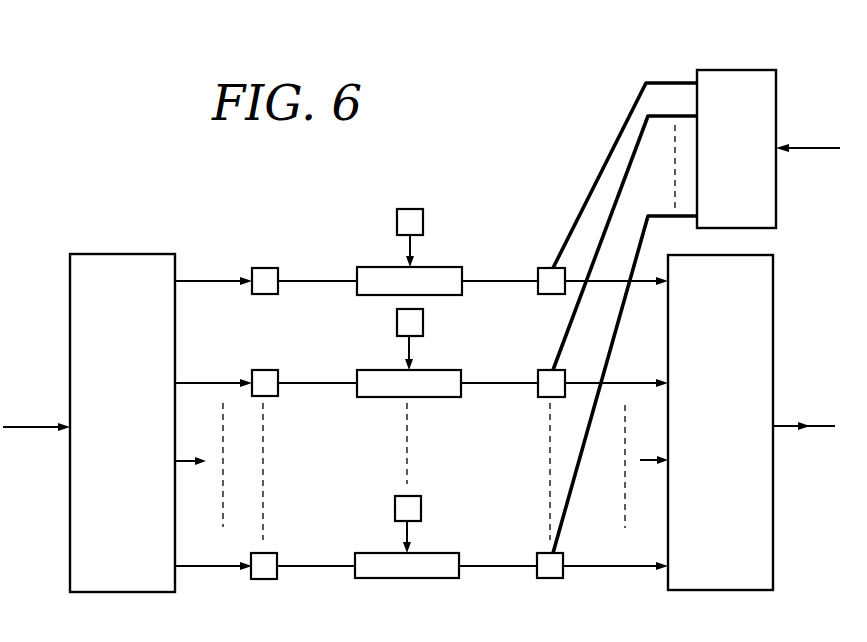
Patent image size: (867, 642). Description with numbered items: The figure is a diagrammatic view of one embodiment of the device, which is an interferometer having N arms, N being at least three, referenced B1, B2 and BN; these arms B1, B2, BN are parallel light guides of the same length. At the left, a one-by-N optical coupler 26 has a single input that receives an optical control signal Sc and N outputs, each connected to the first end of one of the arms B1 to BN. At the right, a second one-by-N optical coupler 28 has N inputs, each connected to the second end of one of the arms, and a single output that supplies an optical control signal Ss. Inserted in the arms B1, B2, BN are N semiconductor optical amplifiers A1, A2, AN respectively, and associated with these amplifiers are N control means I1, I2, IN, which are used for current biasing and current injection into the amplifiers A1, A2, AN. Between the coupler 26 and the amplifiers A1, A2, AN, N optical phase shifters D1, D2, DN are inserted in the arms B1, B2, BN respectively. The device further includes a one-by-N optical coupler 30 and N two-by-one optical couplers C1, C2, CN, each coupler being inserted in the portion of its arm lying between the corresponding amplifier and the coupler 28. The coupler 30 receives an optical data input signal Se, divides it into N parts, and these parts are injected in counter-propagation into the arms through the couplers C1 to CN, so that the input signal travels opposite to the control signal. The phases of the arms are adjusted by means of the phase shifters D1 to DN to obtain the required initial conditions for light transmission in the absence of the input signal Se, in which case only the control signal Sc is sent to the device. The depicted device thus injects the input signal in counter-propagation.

The optical coupler 26 is at (120, 580).
The optical coupler 28 is at (720, 580).
The optical coupler 30 is at (729, 78).
The interferometer arm B1 is at (216, 278).
The interferometer arm B2 is at (206, 380).
The interferometer arm BN is at (205, 570).
The optical phase shifter D1 is at (263, 274).
The optical phase shifter D2 is at (263, 378).
The optical phase shifter DN is at (263, 576).
The semiconductor optical amplifier A1 is at (445, 275).
The semiconductor optical amplifier A2 is at (448, 378).
The semiconductor optical amplifier AN is at (410, 570).
The control means I1 is at (410, 214).
The control means I2 is at (405, 322).
The control means IN is at (397, 508).
The optical coupler C1 is at (546, 273).
The optical coupler C2 is at (548, 377).
The optical coupler CN is at (550, 580).
The optical control signal Sc is at (36, 410).
The optical control signal Ss is at (804, 411).
The optical data input signal Se is at (809, 131).